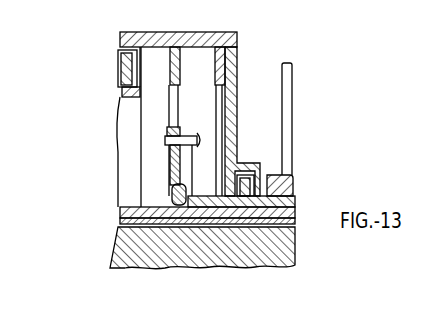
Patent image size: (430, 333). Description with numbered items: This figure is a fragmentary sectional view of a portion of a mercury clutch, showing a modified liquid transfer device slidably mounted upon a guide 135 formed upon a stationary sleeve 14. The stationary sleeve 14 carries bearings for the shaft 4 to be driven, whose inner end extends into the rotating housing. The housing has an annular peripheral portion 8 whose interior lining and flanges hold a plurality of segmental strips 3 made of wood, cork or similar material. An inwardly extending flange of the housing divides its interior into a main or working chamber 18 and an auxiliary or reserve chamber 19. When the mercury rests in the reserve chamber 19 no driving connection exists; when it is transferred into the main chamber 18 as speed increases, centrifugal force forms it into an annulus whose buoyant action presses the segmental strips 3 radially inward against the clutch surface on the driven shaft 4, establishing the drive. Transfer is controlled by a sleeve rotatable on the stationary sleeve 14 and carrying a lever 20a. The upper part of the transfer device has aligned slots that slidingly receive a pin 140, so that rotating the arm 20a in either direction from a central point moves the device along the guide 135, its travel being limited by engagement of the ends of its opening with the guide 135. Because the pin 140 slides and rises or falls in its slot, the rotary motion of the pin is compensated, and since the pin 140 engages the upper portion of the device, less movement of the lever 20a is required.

The annular peripheral portion 8 is at (178, 32).
The segmental strips 3 is at (118, 70).
The main or working chamber 18 is at (148, 127).
The auxiliary or reserve chamber 19 is at (221, 121).
The pin 140 is at (185, 142).
The guide 135 is at (178, 200).
The lever 20a is at (292, 112).
The stationary sleeve 14 is at (293, 213).
The shaft to be driven 4 is at (115, 240).